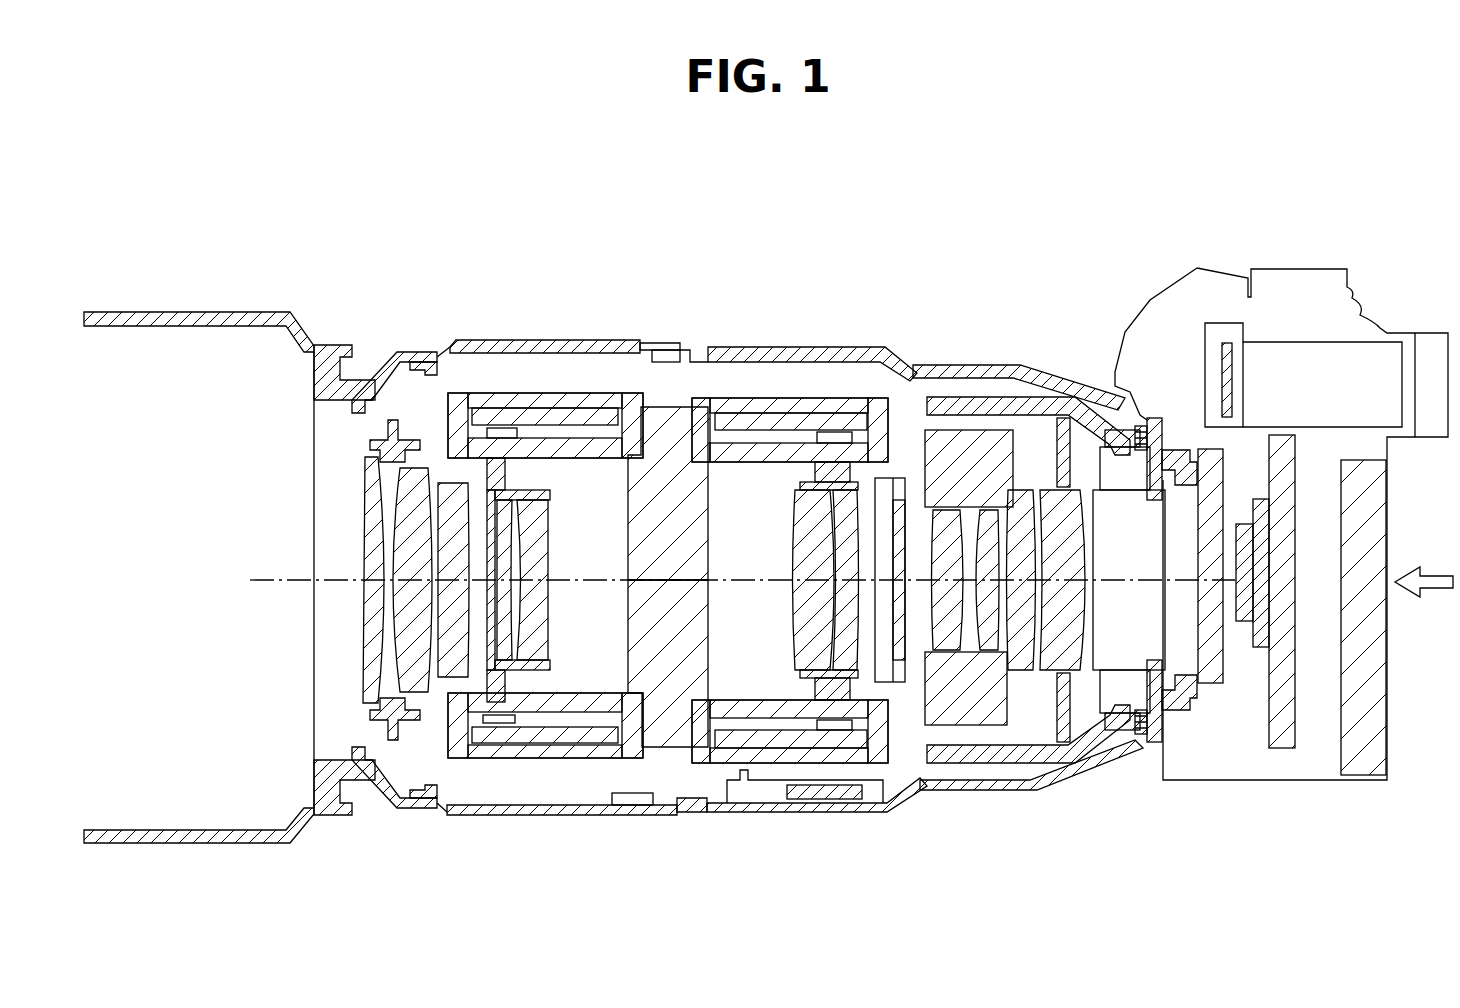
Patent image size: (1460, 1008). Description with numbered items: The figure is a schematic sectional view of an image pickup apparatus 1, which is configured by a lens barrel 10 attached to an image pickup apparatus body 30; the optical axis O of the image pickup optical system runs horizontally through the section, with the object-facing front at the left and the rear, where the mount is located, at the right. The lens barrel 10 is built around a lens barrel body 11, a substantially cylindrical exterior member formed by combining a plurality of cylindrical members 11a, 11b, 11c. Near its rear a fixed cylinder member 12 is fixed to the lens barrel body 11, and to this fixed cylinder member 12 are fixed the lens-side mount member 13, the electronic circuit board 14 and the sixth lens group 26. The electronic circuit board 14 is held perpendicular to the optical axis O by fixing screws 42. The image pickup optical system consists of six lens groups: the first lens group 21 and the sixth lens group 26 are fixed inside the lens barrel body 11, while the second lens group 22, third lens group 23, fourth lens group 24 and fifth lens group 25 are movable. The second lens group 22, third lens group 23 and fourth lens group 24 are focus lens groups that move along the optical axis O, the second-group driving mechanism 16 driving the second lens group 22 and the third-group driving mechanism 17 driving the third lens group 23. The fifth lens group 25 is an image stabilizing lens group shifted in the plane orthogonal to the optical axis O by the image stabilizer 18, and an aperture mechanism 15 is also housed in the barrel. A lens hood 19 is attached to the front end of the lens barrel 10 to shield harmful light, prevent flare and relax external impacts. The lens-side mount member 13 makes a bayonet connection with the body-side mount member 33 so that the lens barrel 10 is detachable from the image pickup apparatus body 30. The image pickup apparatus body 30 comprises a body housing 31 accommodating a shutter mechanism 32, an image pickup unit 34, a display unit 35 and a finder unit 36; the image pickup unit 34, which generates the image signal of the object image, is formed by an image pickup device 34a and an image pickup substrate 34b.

The image pickup apparatus 1 is at (372, 210).
The lens barrel 10 is at (562, 305).
The lens barrel body 11 is at (742, 262).
The cylindrical member 11a is at (645, 340).
The cylindrical member 11b is at (862, 347).
The cylindrical member 11c is at (1005, 362).
The fixed cylinder member 12 is at (1052, 407).
The lens-side mount member 13 is at (1155, 418).
The electronic circuit board 14 is at (1110, 463).
The aperture mechanism 15 is at (678, 722).
The second-group driving mechanism 16 is at (568, 752).
The third-group driving mechanism 17 is at (787, 752).
The image stabilizer 18 is at (983, 450).
The lens hood 19 is at (148, 313).
The first lens group 21 is at (475, 832).
The second lens group 22 is at (480, 832).
The third lens group 23 is at (800, 832).
The fourth lens group 24 is at (874, 832).
The fifth lens group 25 is at (935, 832).
The sixth lens group 26 is at (1008, 832).
The image pickup apparatus body 30 is at (1284, 510).
The body housing 31 is at (1227, 270).
The shutter mechanism 32 is at (1213, 684).
The body-side mount member 33 is at (1182, 450).
The image pickup unit 34 is at (1280, 649).
The image pickup device 34a is at (1248, 622).
The image pickup substrate 34b is at (1280, 748).
The display unit 35 is at (1365, 748).
The finder unit 36 is at (1283, 352).
The fixing screws 42 is at (1138, 428).
The optical axis O is at (264, 578).